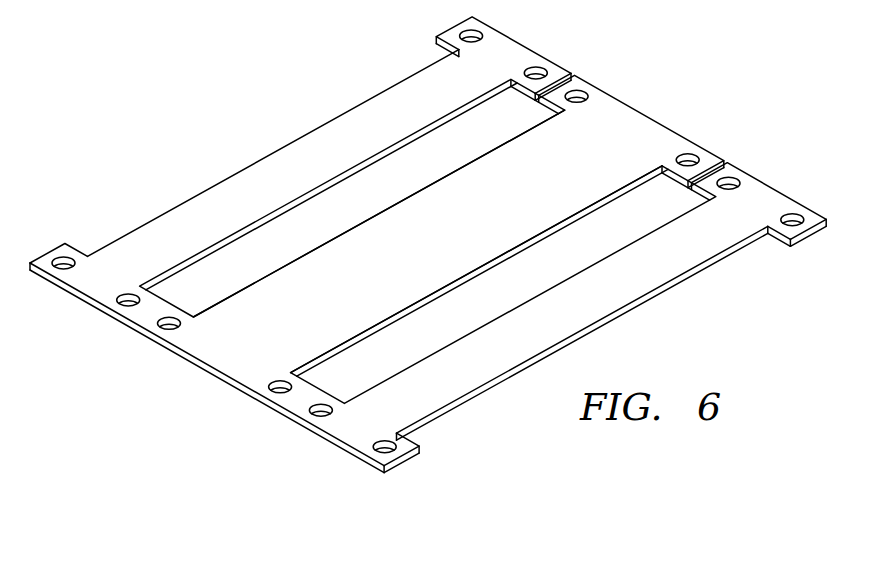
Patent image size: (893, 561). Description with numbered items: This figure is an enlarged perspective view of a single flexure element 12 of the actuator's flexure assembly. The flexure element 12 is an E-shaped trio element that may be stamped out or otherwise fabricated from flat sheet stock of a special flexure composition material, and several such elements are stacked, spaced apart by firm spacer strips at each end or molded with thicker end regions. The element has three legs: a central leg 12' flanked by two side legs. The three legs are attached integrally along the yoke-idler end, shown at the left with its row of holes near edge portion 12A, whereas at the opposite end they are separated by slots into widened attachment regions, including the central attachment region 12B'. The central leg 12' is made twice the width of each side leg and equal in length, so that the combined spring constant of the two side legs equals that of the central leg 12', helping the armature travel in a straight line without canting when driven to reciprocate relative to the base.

The flexure element 12 is at (455, 241).
The front edge portion of plate 12A is at (218, 350).
The central leg 12' is at (427, 241).
The central rear tab 12B' is at (644, 130).